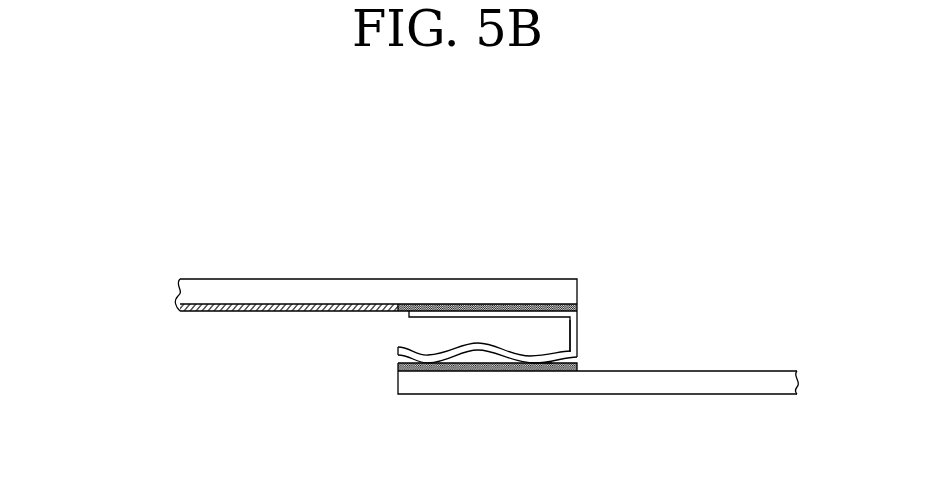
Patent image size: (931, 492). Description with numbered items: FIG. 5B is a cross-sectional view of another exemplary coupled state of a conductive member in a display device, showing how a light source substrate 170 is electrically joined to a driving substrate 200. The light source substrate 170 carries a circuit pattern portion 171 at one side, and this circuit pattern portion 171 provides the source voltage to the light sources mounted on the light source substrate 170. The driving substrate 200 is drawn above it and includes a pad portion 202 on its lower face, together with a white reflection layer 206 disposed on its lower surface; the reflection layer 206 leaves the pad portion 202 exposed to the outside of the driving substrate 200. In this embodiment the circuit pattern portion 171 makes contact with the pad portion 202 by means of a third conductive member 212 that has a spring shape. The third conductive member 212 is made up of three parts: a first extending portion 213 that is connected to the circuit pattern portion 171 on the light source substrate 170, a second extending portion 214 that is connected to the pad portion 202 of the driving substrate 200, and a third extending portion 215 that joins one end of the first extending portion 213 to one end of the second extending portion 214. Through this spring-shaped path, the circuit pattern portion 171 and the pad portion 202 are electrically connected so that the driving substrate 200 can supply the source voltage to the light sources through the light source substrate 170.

The driving substrate 200 is at (188, 293).
The reflection layer 206 is at (179, 308).
The pad portion 202 is at (578, 305).
The second extending portion 214 is at (518, 316).
The third extending portion 215 is at (578, 330).
The third conductive member 212 is at (578, 350).
The circuit pattern portion 171 is at (397, 365).
The light source substrate 170 is at (397, 383).
The first extending portion 213 is at (540, 363).